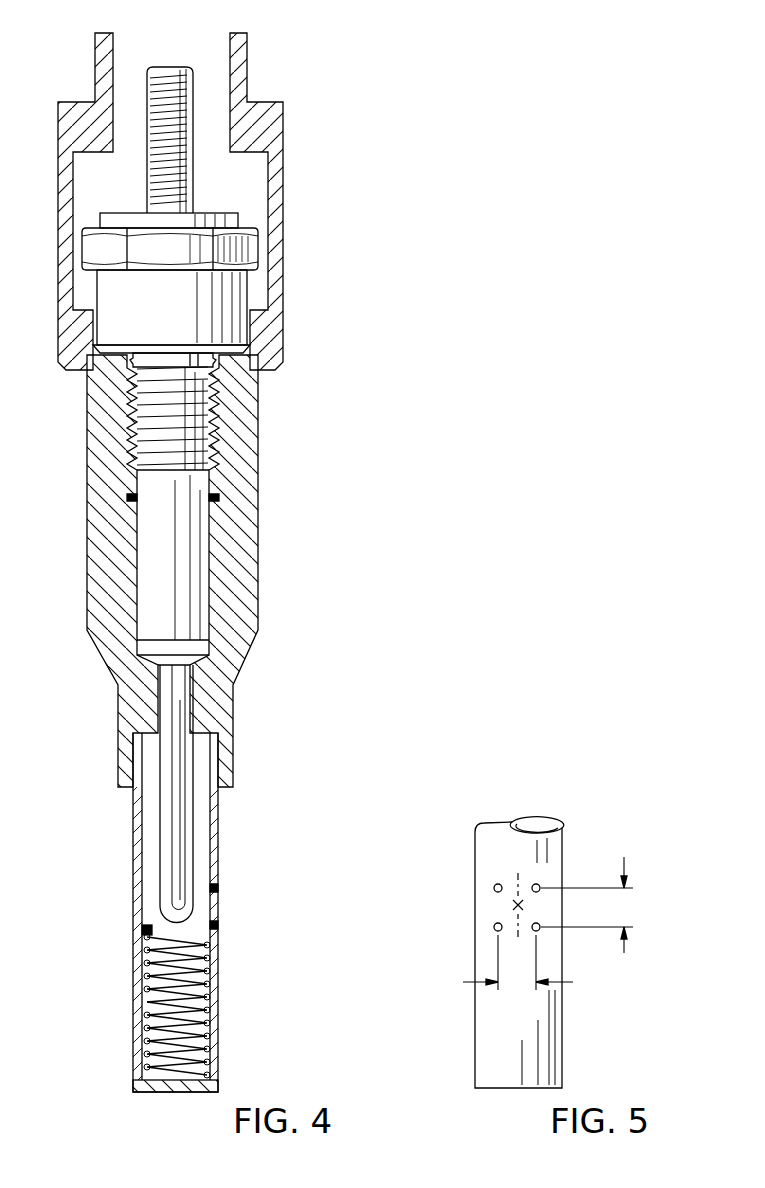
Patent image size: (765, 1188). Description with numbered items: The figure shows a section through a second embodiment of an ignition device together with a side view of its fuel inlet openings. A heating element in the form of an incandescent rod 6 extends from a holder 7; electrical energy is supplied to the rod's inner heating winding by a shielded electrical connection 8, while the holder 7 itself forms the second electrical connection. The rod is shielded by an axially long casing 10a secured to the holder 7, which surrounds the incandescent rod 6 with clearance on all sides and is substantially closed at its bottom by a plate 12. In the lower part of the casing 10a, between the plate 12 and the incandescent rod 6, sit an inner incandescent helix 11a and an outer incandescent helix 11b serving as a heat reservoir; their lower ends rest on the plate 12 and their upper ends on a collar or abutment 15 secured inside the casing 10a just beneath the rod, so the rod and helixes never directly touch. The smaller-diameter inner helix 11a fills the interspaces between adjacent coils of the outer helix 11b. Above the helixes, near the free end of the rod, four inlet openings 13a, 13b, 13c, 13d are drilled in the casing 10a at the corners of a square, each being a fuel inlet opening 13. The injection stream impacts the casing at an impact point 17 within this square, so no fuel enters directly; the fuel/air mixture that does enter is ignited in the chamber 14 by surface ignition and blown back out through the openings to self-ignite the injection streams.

In FIG. 4, the incandescent rod 6 is at (195, 829).
In FIG. 4, the holder 7 is at (246, 450).
In FIG. 4, the shielded electrical connection 8 is at (195, 101).
In FIG. 4, the casing 10a is at (137, 830).
In FIG. 5, the casing 10a is at (547, 1035).
In FIG. 4, the inner incandescent helix 11a is at (150, 1038).
In FIG. 4, the outer incandescent helix 11b is at (146, 964).
In FIG. 4, the bottom plate 12 is at (184, 1090).
In FIG. 4, the fuel inlet opening 13 is at (220, 925).
In FIG. 5, the inlet opening 13a is at (540, 930).
In FIG. 5, the inlet opening 13b is at (540, 886).
In FIG. 5, the inlet opening 13c is at (494, 885).
In FIG. 5, the inlet opening 13d is at (495, 930).
In FIG. 4, the chamber 14 is at (148, 870).
In FIG. 4, the collar or abutment 15 is at (146, 932).
In FIG. 5, the impact point 17 is at (512, 904).